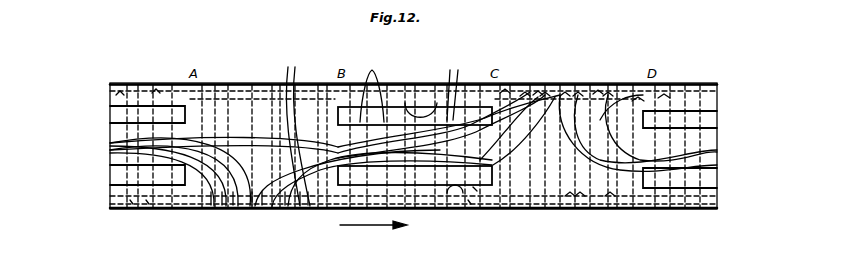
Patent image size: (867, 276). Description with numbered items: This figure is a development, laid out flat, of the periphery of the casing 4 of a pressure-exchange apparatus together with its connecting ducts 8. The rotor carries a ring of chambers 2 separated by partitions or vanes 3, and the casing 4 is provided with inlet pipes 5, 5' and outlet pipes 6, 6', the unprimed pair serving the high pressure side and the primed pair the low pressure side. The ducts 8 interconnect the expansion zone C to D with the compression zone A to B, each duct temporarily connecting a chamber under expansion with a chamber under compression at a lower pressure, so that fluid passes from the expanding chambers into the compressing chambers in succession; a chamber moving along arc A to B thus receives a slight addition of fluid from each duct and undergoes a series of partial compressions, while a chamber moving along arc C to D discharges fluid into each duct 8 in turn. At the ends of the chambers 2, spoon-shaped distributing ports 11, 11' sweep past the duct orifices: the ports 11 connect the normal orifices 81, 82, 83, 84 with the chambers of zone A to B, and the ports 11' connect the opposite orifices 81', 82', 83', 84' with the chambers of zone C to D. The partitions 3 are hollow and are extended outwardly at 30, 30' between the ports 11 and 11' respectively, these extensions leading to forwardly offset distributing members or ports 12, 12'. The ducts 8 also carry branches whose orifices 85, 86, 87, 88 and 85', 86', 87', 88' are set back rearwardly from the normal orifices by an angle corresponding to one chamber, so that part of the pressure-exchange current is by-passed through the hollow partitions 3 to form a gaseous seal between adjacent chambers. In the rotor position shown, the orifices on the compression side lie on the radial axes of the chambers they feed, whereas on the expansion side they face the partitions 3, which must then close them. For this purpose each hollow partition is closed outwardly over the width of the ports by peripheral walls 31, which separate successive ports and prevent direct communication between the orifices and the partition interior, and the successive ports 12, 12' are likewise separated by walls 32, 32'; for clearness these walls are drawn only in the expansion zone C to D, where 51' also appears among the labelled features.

The chambers 2 is at (372, 88).
The partitions or vanes 3 is at (452, 87).
The casing 4 is at (238, 86).
The inlet pipe 5 is at (483, 212).
The outlet pipe 6 is at (421, 85).
The connecting ducts 8 is at (750, 152).
The distributing ports 11 is at (288, 213).
The distributing members or ports 12 is at (307, 228).
The outward extension of hollow partition 30 is at (415, 210).
The peripheral walls 31 is at (580, 206).
The walls 32 is at (613, 218).
The orifice 81 is at (313, 214).
The orifice 82 is at (286, 214).
The orifice 83 is at (255, 214).
The orifice 84 is at (218, 214).
The branch orifice 85 is at (303, 223).
The branch orifice 86 is at (261, 222).
The branch orifice 87 is at (231, 222).
The branch orifice 88 is at (199, 222).
The inlet pipe 5' is at (414, 179).
The outlet pipe 6' is at (413, 117).
The distributing ports 11' is at (124, 74).
The distributing members or ports 12' is at (160, 73).
The outward extension of hollow partition 30' is at (415, 89).
The walls 32' is at (657, 67).
The terminal 51' is at (680, 76).
The orifice 81' is at (518, 75).
The orifice 82' is at (548, 74).
The orifice 83' is at (585, 74).
The orifice 84' is at (618, 74).
The branch orifice 85' is at (491, 73).
The branch orifice 86' is at (537, 61).
The branch orifice 87' is at (571, 62).
The branch orifice 88' is at (611, 61).